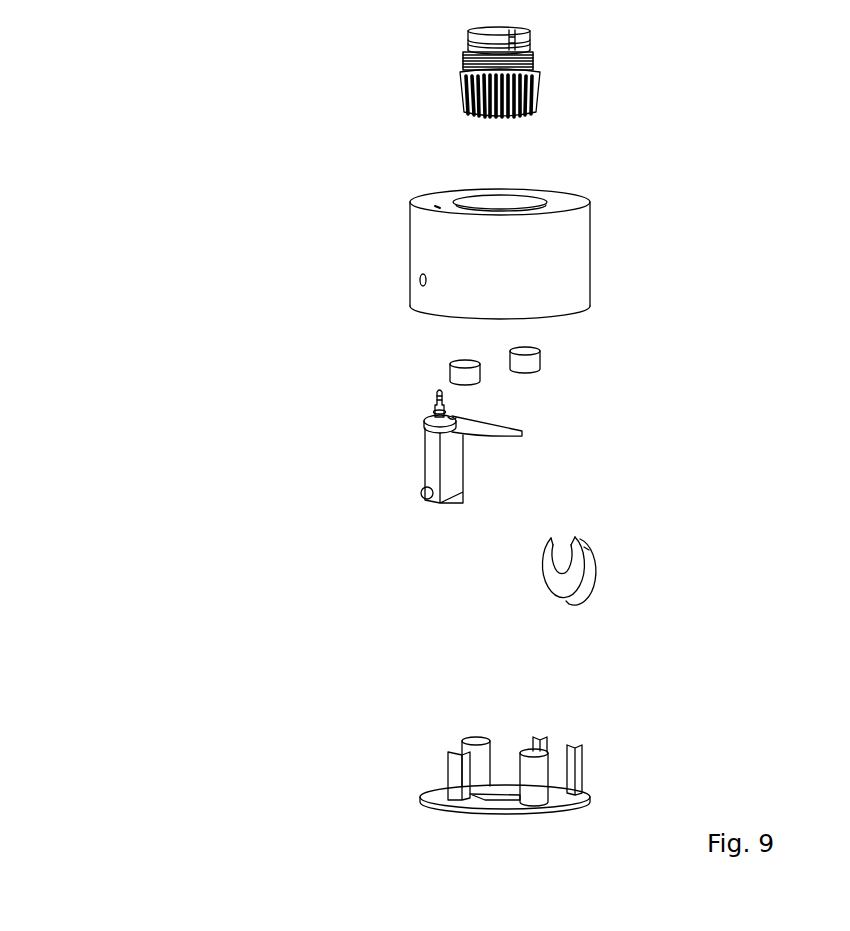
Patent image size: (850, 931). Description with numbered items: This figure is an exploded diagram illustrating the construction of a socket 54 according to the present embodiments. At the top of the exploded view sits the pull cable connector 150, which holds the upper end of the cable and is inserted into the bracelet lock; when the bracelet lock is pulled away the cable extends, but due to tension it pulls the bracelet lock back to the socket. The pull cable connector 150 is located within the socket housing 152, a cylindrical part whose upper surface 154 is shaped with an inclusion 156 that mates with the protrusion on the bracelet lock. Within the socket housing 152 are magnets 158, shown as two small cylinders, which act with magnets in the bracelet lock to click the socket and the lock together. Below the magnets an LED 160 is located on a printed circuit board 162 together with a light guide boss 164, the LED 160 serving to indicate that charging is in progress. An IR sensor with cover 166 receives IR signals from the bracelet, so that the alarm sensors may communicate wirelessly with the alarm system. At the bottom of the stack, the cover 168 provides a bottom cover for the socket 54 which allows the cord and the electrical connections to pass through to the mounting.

The socket 54 is at (317, 307).
The pull cable connector 150 is at (535, 50).
The socket housing 152 is at (422, 250).
The upper surface 154 is at (577, 195).
The inclusion 156 is at (488, 200).
The magnets 158 is at (548, 363).
The LED 160 is at (436, 408).
The printed circuit board 162 is at (432, 440).
The light guide boss 164 is at (425, 494).
The IR sensor with cover 166 is at (560, 573).
The cover 168 is at (452, 796).